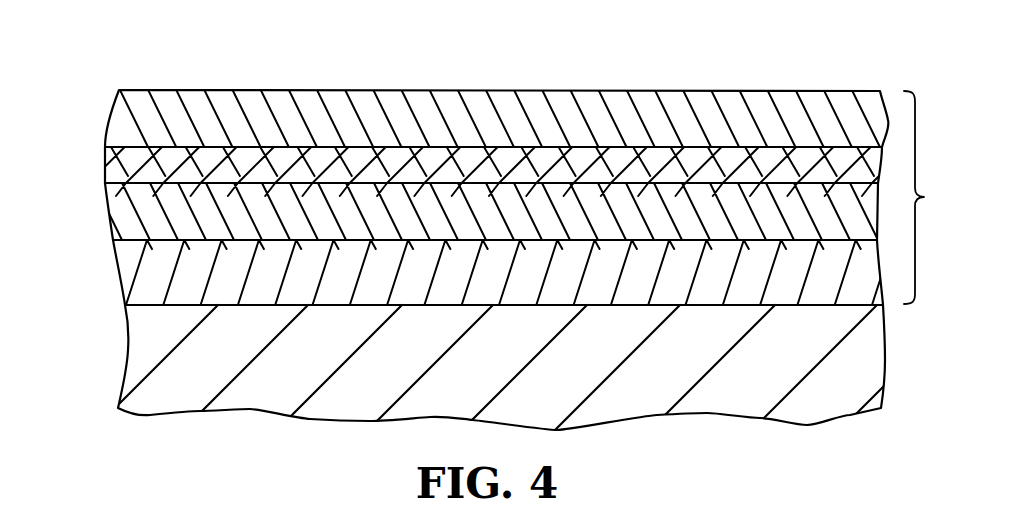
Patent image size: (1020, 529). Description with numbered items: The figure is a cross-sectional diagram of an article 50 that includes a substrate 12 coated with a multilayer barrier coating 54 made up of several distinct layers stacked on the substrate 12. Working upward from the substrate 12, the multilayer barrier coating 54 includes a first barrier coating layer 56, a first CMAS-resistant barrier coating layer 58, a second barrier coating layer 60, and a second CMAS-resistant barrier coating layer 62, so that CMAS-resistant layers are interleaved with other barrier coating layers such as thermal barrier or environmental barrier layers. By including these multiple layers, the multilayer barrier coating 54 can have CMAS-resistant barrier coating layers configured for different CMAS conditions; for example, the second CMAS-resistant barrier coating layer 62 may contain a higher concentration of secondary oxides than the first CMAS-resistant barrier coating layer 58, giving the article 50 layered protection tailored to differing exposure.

The article 50 is at (504, 220).
The multilayer barrier coating 54 is at (503, 197).
The second CMAS-resistant barrier coating layer 62 is at (130, 121).
The second barrier coating layer 60 is at (130, 167).
The first CMAS-resistant barrier coating layer 58 is at (128, 212).
The first barrier coating layer 56 is at (130, 272).
The substrate 12 is at (151, 355).